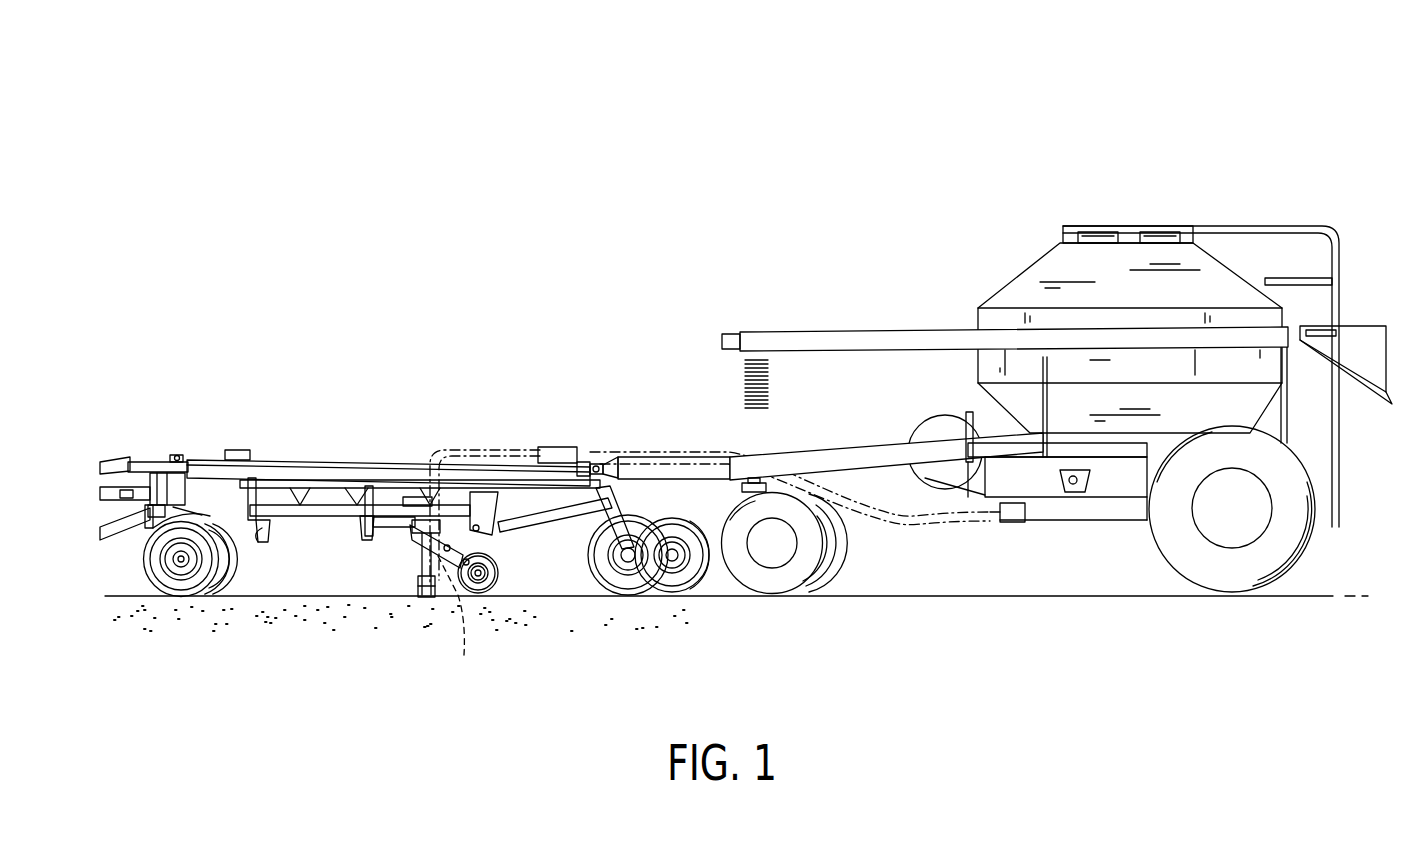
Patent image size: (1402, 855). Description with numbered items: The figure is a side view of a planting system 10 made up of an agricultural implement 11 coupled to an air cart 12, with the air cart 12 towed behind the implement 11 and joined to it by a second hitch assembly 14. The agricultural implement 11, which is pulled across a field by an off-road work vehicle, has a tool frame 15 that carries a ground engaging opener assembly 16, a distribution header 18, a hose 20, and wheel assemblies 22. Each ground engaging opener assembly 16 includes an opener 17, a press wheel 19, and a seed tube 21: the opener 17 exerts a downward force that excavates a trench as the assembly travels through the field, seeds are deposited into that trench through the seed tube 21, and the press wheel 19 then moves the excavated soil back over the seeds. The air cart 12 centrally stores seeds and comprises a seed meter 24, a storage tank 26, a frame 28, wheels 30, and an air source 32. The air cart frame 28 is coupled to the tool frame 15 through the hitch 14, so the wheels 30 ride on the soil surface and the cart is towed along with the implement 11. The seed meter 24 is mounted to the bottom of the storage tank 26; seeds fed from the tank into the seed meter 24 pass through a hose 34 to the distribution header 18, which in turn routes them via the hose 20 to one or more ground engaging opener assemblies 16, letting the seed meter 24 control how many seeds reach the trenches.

The planting system 10 is at (316, 251).
The agricultural implement 11 is at (226, 418).
The air cart 12 is at (1024, 189).
The second hitch assembly 14 is at (606, 463).
The tool frame 15 is at (414, 480).
The ground engaging opener assembly 16 is at (388, 580).
The opener 17 is at (416, 598).
The distribution header 18 is at (566, 446).
The press wheel 19 is at (496, 590).
The hose 20 is at (493, 445).
The seed tube 21 is at (458, 623).
The wheel assemblies 22 is at (186, 602).
The seed meter 24 is at (1078, 493).
The storage tank 26 is at (1050, 265).
The frame 28 is at (845, 447).
The wheels 30 is at (848, 542).
The air source 32 is at (920, 418).
The hose 34 is at (905, 522).